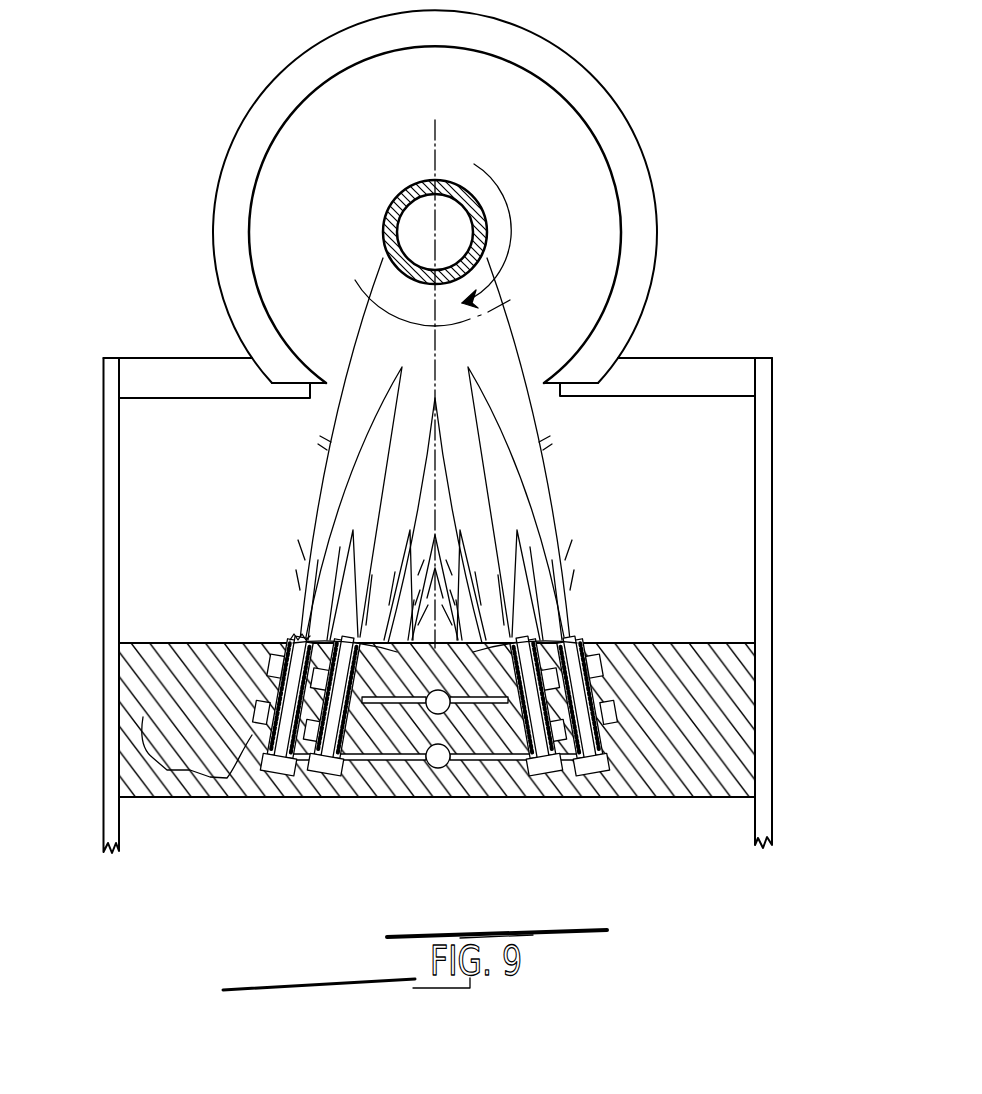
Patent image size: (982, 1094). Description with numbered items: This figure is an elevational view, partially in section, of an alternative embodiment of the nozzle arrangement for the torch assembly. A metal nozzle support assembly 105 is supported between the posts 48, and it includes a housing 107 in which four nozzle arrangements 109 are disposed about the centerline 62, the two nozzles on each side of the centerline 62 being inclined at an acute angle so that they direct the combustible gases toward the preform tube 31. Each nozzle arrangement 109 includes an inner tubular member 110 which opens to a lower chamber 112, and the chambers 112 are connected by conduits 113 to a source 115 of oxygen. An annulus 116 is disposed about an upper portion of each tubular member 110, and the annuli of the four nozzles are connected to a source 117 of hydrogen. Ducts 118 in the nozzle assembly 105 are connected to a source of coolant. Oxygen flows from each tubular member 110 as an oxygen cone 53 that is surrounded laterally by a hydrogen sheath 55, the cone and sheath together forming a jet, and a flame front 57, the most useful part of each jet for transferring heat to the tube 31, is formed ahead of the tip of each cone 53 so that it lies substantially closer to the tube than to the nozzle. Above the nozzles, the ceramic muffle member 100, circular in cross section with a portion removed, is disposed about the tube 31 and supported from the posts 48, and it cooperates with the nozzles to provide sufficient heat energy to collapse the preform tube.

The tube 31 is at (420, 185).
The posts 48 is at (104, 575).
The oxygen cone 53 is at (395, 490).
The hydrogen sheath 55 is at (325, 440).
The flame front 57 is at (512, 298).
The centerline 62 is at (436, 353).
The muffle member 100 is at (620, 120).
The nozzle support assembly 105 is at (678, 632).
The housing 107 is at (195, 643).
The nozzle arrangements 109 is at (285, 708).
The inner tubular member 110 is at (520, 642).
The lower chamber 112 is at (603, 778).
The conduits 113 is at (393, 762).
The source of oxygen 115 is at (437, 770).
The annulus 116 is at (298, 638).
The source of hydrogen 117 is at (447, 712).
The ducts 118 is at (622, 722).